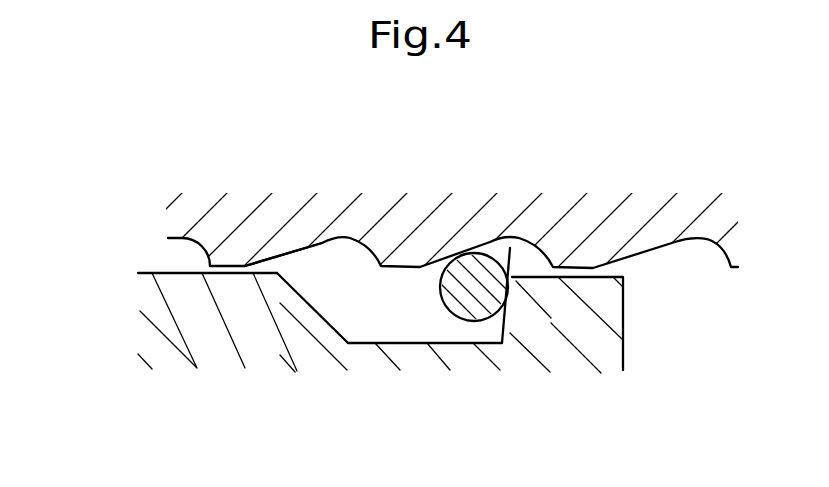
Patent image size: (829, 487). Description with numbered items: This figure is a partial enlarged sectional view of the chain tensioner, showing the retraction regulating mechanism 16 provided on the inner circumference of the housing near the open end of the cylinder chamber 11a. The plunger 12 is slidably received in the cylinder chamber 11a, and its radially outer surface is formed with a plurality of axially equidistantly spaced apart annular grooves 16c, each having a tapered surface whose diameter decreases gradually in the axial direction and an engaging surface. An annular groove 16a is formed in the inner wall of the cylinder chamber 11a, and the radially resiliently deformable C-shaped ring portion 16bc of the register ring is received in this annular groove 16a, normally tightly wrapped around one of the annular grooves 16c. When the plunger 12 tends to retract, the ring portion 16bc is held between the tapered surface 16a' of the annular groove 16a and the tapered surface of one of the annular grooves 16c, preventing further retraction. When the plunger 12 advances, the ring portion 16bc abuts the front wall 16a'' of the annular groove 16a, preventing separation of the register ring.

The plunger 12 is at (369, 217).
The annular grooves 16c is at (300, 245).
The C-shaped ring portion 16bc is at (470, 278).
The cylinder chamber 11a is at (150, 273).
The tapered surface 16a' is at (308, 356).
The annular groove 16a is at (425, 388).
The front wall 16a'' is at (505, 349).
The retraction regulating mechanism 16 is at (545, 290).